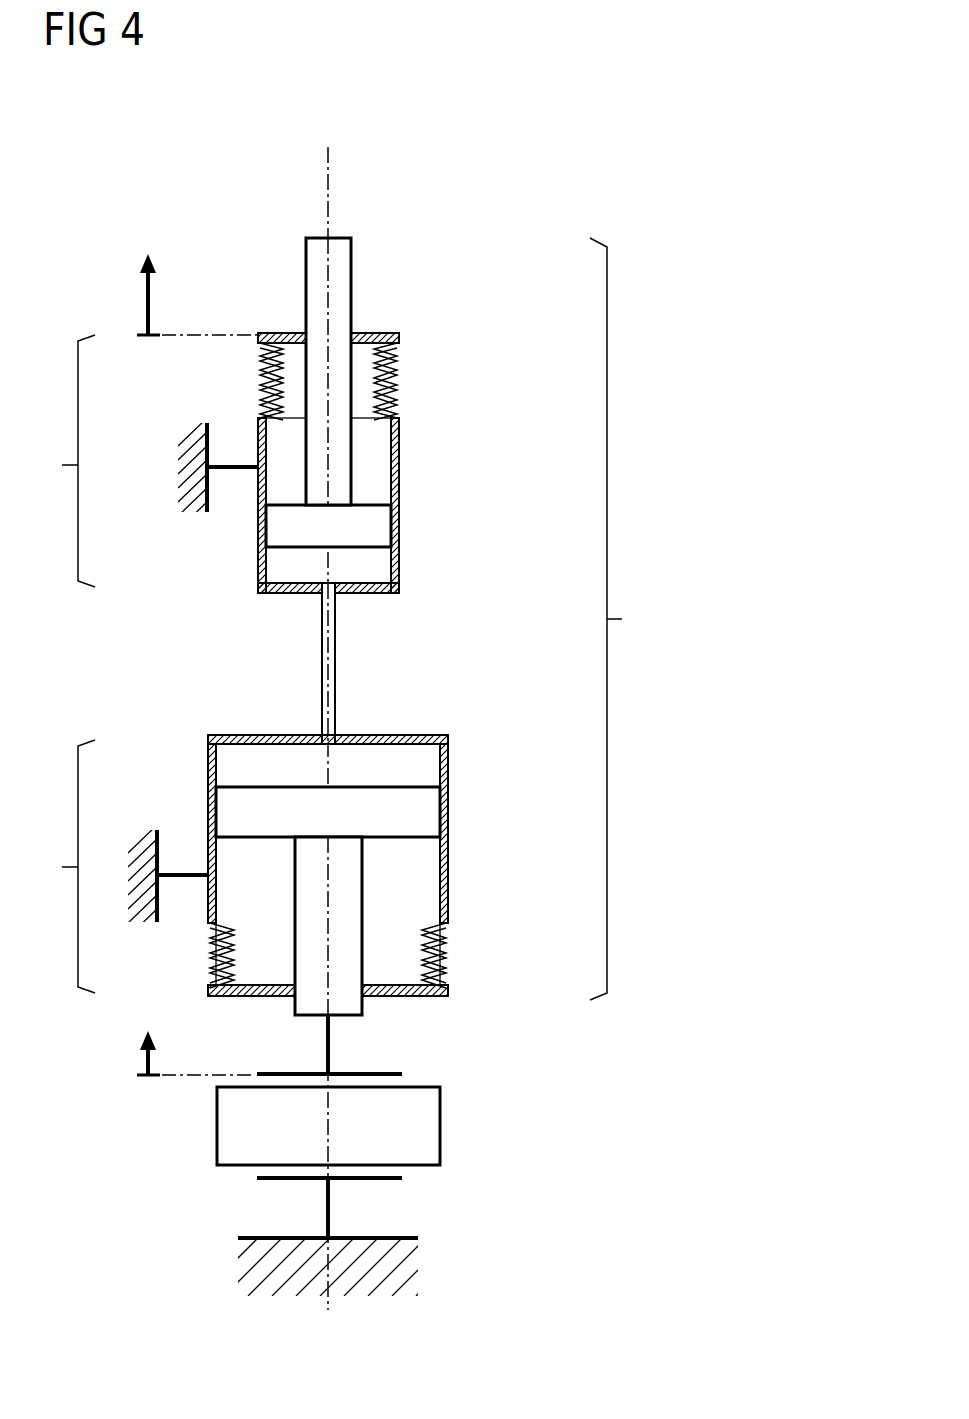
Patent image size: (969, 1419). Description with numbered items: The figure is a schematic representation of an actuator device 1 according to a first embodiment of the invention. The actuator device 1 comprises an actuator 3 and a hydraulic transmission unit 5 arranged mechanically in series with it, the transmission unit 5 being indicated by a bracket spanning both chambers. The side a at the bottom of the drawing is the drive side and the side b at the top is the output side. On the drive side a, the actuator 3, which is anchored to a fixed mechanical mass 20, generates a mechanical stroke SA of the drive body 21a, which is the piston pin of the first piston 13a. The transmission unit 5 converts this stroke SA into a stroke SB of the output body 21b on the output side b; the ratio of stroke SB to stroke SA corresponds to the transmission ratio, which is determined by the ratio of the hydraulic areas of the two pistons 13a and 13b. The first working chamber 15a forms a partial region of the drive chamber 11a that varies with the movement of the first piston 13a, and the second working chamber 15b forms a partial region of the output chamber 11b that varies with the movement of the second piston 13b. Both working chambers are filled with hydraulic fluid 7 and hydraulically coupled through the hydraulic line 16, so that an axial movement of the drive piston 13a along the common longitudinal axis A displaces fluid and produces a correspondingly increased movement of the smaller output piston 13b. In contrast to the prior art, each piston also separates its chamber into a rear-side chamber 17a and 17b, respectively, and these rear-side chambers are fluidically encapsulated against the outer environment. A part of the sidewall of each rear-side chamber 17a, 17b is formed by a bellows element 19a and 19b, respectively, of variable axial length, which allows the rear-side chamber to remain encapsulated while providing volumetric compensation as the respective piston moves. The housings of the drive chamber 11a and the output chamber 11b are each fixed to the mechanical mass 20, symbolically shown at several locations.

The actuator device 1 is at (690, 305).
The actuator 3 is at (236, 1128).
The hydraulic transmission unit 5 is at (619, 619).
The hydraulic fluid 7 is at (278, 757).
The drive chamber 11a is at (267, 855).
The output chamber 11b is at (249, 415).
The first piston 13a is at (410, 820).
The second piston 13b is at (373, 527).
The first working chamber 15a is at (420, 766).
The second working chamber 15b is at (373, 568).
The hydraulic line 16 is at (336, 660).
The rear-side chamber 17a is at (420, 877).
The rear-side chamber 17b is at (373, 457).
The bellows element 19a is at (220, 960).
The bellows element 19b is at (262, 386).
The mechanical mass 20 is at (265, 1268).
The drive body 21a is at (350, 1002).
The output body 21b is at (345, 270).
The longitudinal axis A is at (330, 150).
The stroke SA is at (178, 1053).
The stroke SB is at (180, 294).
The drive side a is at (480, 1096).
The output side b is at (480, 212).